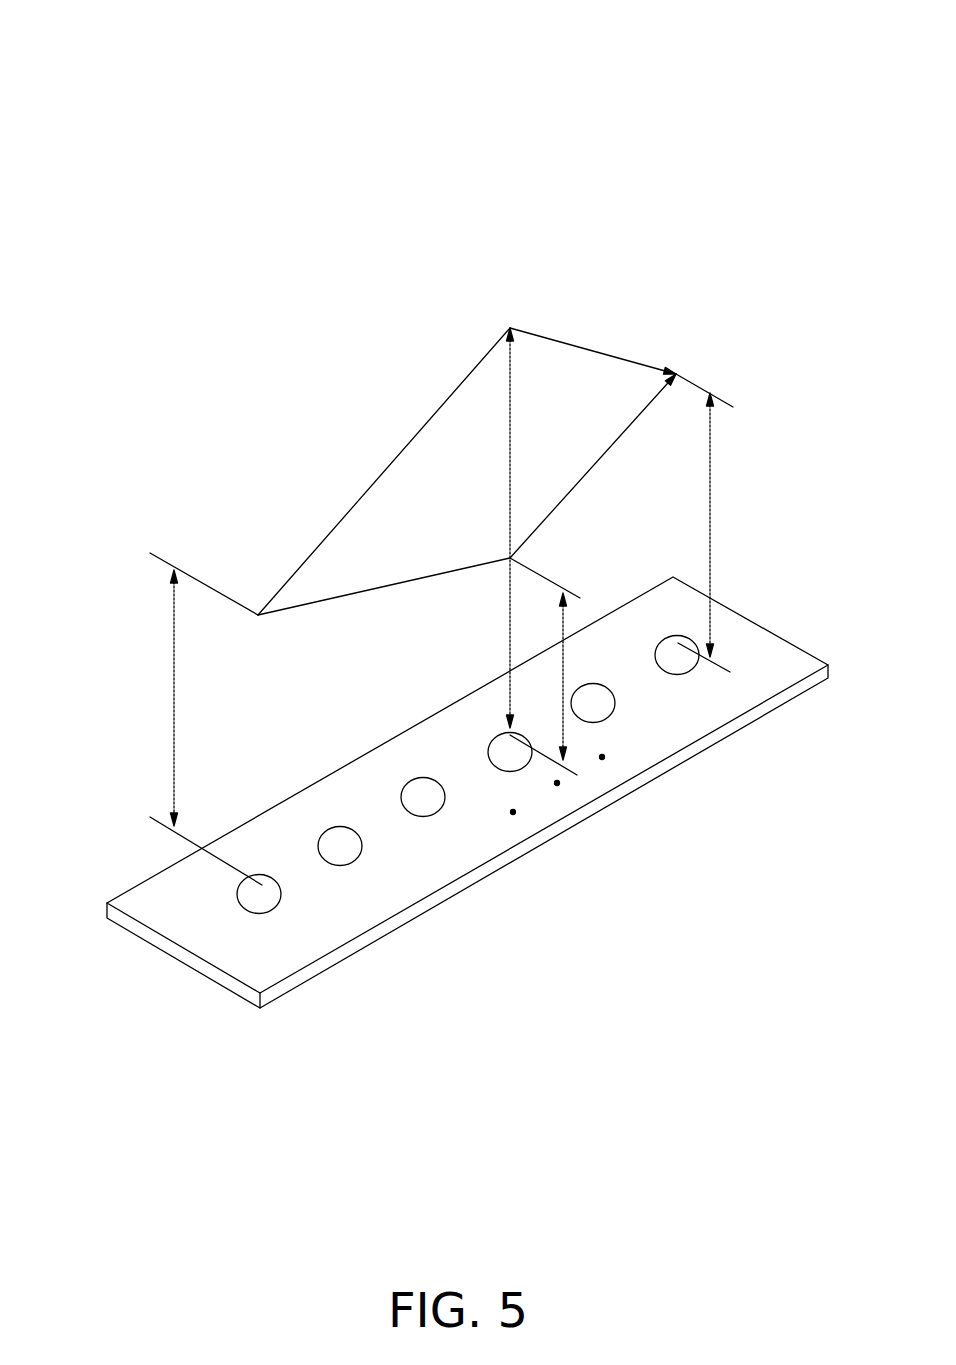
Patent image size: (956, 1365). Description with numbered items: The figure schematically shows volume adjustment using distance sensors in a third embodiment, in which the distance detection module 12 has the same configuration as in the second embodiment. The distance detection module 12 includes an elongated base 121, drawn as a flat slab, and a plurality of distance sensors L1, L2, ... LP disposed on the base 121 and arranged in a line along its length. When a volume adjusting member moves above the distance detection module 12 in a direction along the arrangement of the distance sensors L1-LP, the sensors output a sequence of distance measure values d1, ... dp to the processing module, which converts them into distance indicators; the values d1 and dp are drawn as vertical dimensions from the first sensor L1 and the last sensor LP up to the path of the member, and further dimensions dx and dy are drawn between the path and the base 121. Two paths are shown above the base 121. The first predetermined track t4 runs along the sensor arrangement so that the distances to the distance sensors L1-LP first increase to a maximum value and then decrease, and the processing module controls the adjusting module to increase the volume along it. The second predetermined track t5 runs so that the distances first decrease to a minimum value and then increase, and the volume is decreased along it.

The distance detection module 12 is at (484, 46).
The base 121 is at (195, 938).
The first predetermined track t4 is at (410, 440).
The second predetermined track t5 is at (577, 490).
The horizontal distance dx is at (521, 551).
The vertical distance dy is at (559, 676).
The distance measure value dp is at (716, 532).
The distance measure value d1 is at (206, 727).
The distance sensor L1 is at (269, 913).
The distance sensor L2 is at (352, 863).
The distance sensor LP is at (685, 675).